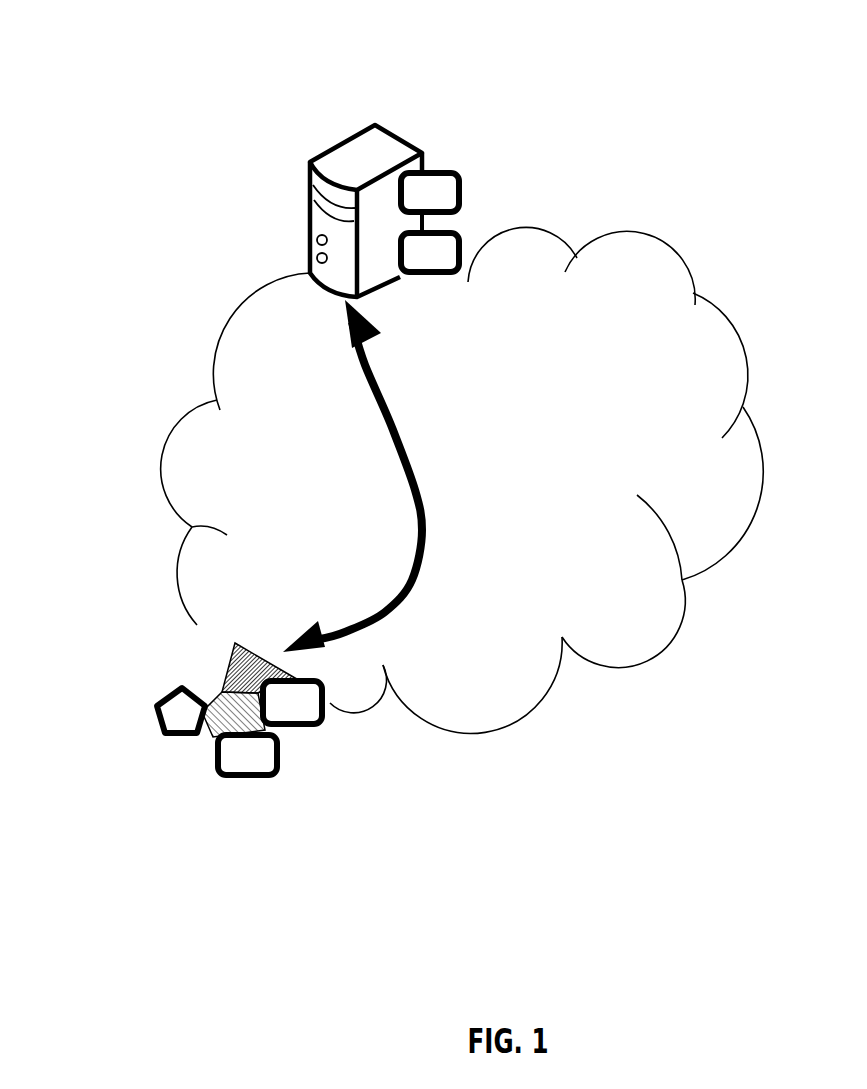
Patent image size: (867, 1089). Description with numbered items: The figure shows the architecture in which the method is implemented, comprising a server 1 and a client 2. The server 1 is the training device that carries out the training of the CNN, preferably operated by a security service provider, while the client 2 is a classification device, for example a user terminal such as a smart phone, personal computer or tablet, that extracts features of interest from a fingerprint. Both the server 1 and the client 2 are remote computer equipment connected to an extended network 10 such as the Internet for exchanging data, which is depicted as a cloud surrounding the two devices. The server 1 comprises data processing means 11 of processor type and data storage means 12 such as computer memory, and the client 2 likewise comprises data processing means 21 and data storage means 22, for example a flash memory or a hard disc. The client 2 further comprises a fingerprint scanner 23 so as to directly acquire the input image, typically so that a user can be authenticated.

The server 1 is at (375, 120).
The extended network 10 is at (225, 297).
The data processing means 11 is at (465, 255).
The data storage means 12 is at (467, 183).
The client 2 is at (222, 667).
The data processing means 21 is at (328, 732).
The data storage means 22 is at (278, 777).
The fingerprint scanner 23 is at (158, 730).